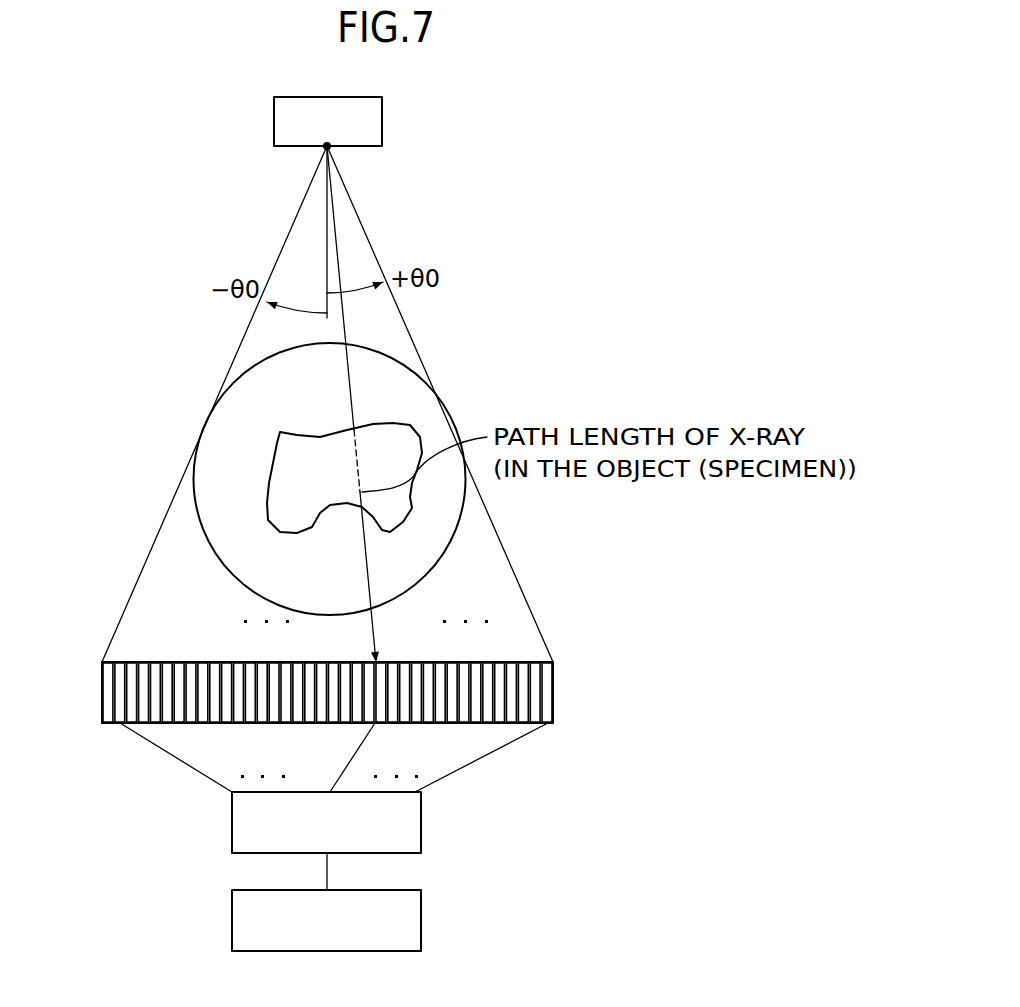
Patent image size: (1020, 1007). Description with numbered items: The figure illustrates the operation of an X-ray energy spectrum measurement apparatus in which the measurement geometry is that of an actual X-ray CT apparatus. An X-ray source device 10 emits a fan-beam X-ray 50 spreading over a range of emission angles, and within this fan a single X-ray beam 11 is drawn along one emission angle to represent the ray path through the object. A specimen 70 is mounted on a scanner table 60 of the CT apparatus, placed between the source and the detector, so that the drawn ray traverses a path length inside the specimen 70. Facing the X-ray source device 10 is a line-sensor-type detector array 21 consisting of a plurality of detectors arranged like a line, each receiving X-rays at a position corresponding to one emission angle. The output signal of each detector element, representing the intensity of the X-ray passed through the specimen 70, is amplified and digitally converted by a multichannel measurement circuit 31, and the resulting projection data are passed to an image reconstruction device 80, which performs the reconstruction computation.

The X-ray source device 10 is at (274, 118).
The X-ray beam 11 is at (335, 237).
The line-sensor-type detector array 21 is at (102, 692).
The multichannel measurement circuit 31 is at (232, 823).
The fan-beam X-ray 50 is at (370, 243).
The scanner table 60 is at (402, 363).
The specimen 70 is at (398, 423).
The image reconstruction device 80 is at (232, 922).